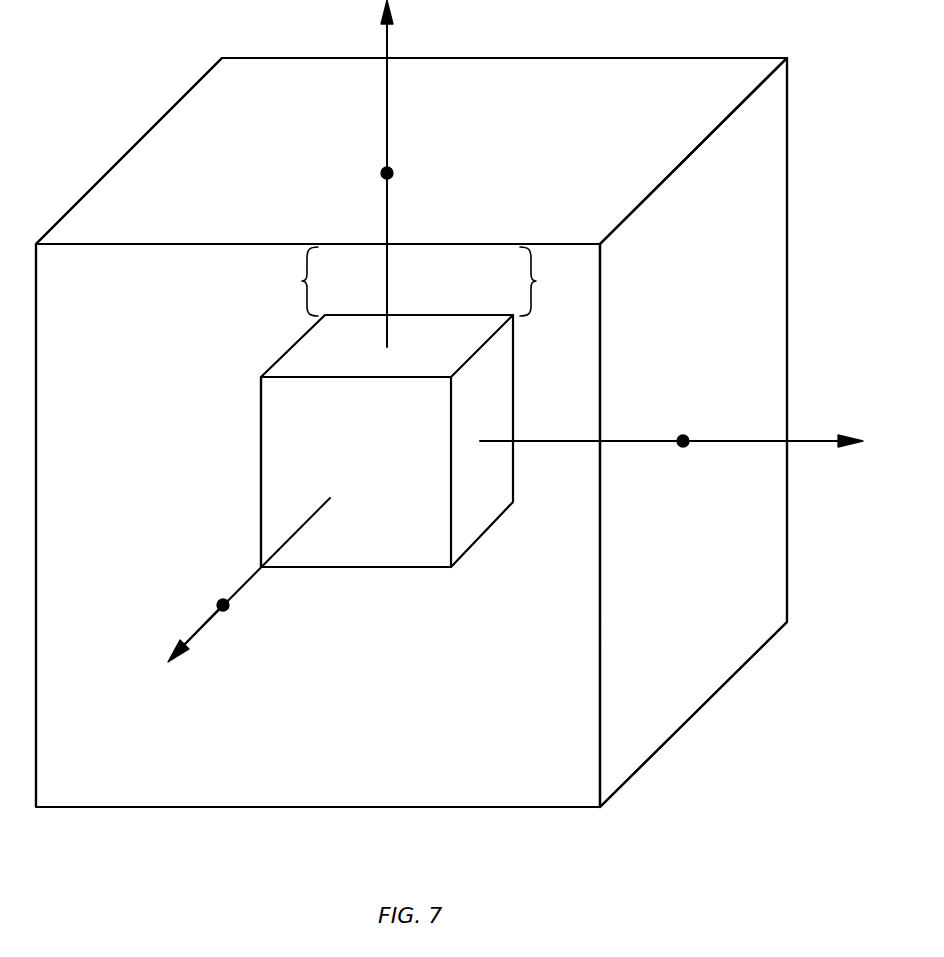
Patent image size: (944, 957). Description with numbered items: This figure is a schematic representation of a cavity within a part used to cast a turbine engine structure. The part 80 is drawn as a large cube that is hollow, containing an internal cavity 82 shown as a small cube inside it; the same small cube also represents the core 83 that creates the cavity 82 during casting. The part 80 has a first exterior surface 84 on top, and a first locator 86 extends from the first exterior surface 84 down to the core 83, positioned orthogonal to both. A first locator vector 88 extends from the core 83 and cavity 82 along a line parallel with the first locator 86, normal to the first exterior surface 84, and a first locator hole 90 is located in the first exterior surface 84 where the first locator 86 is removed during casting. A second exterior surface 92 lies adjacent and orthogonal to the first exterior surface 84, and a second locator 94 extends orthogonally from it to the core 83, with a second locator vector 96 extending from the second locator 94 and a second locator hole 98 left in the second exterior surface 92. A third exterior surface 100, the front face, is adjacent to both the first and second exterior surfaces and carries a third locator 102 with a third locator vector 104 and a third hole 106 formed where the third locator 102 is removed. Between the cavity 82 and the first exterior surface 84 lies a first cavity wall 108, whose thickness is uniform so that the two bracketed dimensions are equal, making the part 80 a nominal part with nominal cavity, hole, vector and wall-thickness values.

The part 80 is at (122, 731).
The cavity 82 is at (370, 474).
The core 83 is at (261, 403).
The first exterior surface 84 is at (619, 129).
The first locator 86 is at (387, 220).
The first locator vector 88 is at (387, 84).
The first locator hole 90 is at (381, 173).
The second exterior surface 92 is at (724, 257).
The second locator 94 is at (565, 443).
The second locator vector 96 is at (813, 437).
The second locator hole 98 is at (683, 447).
The third exterior surface 100 is at (575, 371).
The third locator 102 is at (243, 580).
The third locator vector 104 is at (200, 630).
The third hole 106 is at (229, 607).
The first cavity wall 108 is at (458, 296).